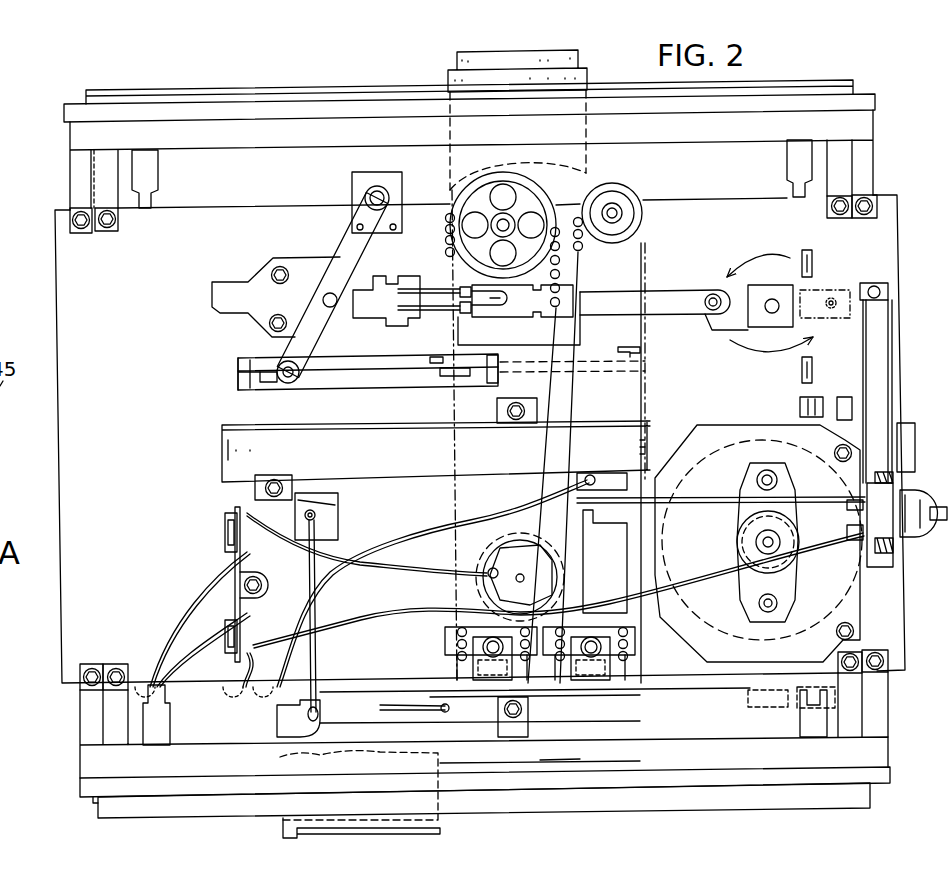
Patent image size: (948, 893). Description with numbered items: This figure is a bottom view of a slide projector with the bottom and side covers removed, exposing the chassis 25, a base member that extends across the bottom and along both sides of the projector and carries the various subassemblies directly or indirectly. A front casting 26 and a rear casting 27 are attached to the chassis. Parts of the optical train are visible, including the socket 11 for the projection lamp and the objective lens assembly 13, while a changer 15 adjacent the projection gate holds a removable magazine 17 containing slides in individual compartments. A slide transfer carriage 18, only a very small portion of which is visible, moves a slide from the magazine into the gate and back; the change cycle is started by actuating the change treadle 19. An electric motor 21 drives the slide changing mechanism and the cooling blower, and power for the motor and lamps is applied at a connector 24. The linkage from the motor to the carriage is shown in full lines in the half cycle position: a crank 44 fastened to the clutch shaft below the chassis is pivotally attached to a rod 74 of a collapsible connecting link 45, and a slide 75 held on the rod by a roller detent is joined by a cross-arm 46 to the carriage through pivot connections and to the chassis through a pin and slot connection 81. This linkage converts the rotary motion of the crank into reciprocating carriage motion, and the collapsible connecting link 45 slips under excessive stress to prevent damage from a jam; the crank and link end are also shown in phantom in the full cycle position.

The socket 11 is at (495, 548).
The objective lens assembly 13 is at (457, 55).
The changer 15 is at (268, 345).
The magazine 17 is at (283, 822).
The slide transfer carriage 18 is at (380, 378).
The change treadle 19 is at (870, 800).
The electric motor 21 is at (752, 492).
The connector 24 is at (892, 538).
The chassis 25 is at (877, 260).
The front casting 26 is at (867, 100).
The rear casting 27 is at (83, 790).
The crank 44 is at (737, 287).
The collapsible connecting link 45 is at (440, 280).
The cross-arm 46 is at (340, 260).
The rod 74 is at (685, 300).
The slide 75 is at (268, 275).
The pin and slot connection 81 is at (380, 192).